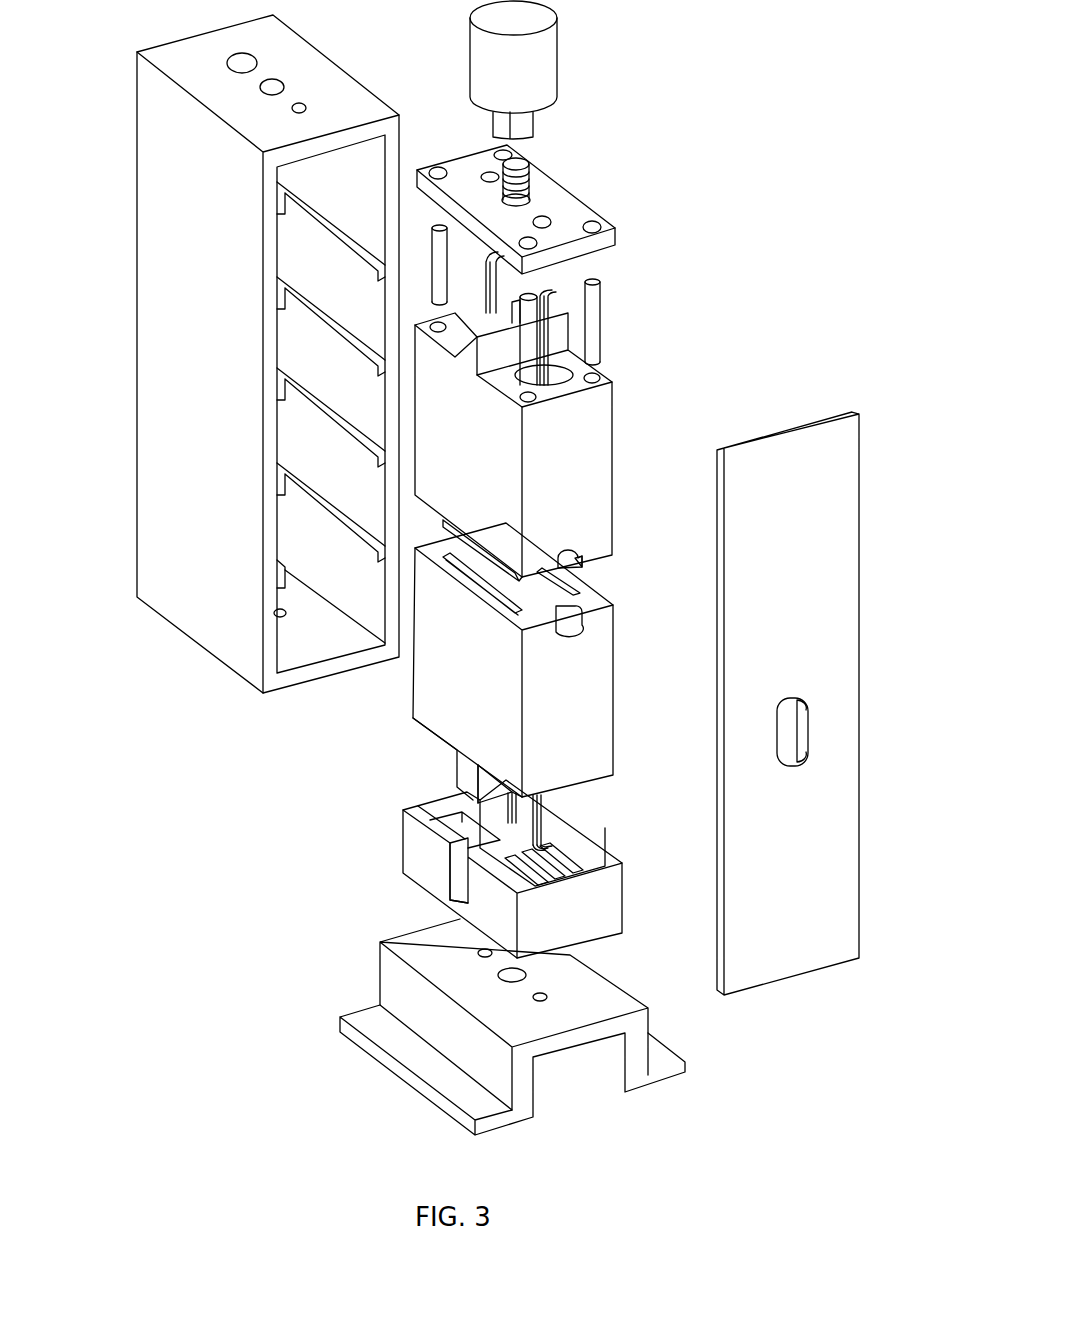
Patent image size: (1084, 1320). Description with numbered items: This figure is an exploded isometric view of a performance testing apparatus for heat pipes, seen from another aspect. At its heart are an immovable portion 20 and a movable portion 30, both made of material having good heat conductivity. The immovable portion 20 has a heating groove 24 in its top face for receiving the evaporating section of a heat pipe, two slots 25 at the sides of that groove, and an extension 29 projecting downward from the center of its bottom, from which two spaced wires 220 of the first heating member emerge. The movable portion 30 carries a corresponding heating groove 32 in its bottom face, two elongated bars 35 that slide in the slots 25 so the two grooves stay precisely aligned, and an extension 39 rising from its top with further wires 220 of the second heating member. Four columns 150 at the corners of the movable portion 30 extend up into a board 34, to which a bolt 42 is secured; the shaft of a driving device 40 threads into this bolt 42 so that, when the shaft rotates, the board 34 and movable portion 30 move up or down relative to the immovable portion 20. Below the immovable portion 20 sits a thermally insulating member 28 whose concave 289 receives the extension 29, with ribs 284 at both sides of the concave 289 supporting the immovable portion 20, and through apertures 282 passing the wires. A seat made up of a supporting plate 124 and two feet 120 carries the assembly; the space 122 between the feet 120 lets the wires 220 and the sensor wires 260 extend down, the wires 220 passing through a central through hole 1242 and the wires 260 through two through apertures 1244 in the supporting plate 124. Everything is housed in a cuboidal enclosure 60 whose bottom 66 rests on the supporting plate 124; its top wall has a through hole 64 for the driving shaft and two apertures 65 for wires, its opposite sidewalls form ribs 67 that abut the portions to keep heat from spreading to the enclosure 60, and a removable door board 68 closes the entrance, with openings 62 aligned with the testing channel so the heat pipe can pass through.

The immovable portion 20 is at (435, 688).
The heating groove 24 is at (570, 625).
The slots 25 is at (580, 592).
The thermally insulating member 28 is at (598, 918).
The extension 29 is at (462, 768).
The movable portion 30 is at (596, 405).
The heating groove 32 is at (585, 557).
The board 34 is at (555, 205).
The elongated bars 35 is at (582, 563).
The extension 39 is at (557, 338).
The driving device 40 is at (530, 60).
The bolt 42 is at (518, 163).
The cuboidal enclosure 60 is at (172, 230).
The openings 62 is at (792, 730).
The through hole 64 is at (270, 87).
The apertures 65 is at (300, 106).
The bottom 66 is at (295, 643).
The ribs 67 is at (282, 578).
The door board 68 is at (836, 464).
The feet 120 is at (477, 1027).
The space 122 is at (563, 1080).
The supporting plate 124 is at (607, 1000).
The columns 150 is at (592, 306).
The wires 220 is at (517, 300).
The wires 260 is at (540, 822).
The through apertures 282 is at (567, 887).
The ribs 284 is at (460, 802).
The concave 289 is at (462, 897).
The central through hole 1242 is at (520, 973).
The through apertures 1244 is at (478, 953).